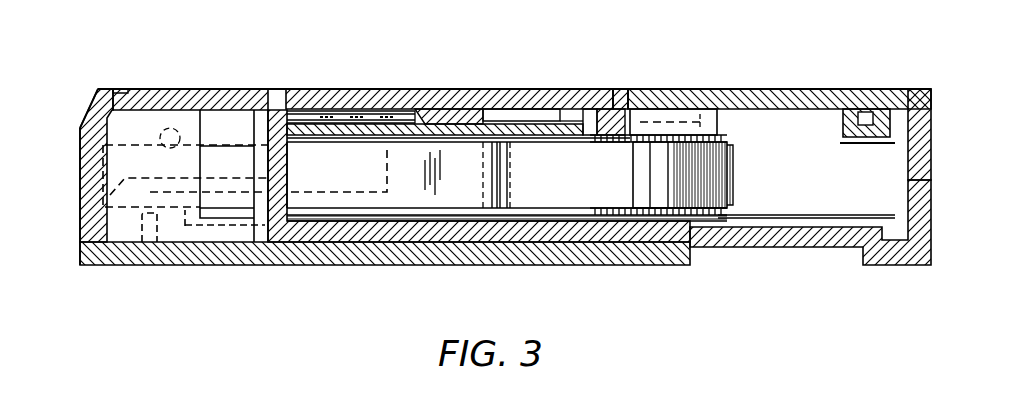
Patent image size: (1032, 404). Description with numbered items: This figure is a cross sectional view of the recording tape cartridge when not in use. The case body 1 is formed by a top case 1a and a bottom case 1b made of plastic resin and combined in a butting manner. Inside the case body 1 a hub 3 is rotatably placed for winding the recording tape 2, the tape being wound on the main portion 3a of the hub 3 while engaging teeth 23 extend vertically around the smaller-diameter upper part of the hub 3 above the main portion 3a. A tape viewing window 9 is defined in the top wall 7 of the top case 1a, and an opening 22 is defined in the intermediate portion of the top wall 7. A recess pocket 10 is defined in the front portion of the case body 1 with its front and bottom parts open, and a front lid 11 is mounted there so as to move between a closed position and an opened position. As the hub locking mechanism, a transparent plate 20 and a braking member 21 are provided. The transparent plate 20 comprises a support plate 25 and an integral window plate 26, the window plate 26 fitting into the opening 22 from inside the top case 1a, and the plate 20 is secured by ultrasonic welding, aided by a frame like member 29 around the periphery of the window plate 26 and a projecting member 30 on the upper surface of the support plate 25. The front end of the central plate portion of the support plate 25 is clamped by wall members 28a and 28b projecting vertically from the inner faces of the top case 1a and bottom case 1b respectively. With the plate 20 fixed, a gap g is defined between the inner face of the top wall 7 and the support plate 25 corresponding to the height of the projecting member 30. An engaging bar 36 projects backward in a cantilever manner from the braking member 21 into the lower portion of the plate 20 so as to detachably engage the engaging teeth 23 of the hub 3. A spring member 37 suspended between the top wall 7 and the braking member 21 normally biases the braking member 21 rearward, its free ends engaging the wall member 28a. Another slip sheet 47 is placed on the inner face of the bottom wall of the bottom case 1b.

The case body 1 is at (930, 98).
The top case 1a is at (919, 160).
The bottom case 1b is at (918, 257).
The recording tape 2 is at (80, 148).
The hub 3 is at (732, 200).
The main portion 3a is at (733, 165).
The top wall 7 is at (862, 100).
The tape viewing window 9 is at (806, 91).
The recess pocket 10 is at (263, 232).
The front lid 11 is at (93, 200).
The transparent plate 20 is at (627, 88).
The braking member 21 is at (428, 110).
The opening 22 is at (845, 126).
The engaging teeth 23 is at (700, 146).
The support plate 25 is at (594, 143).
The window plate 26 is at (695, 109).
The wall member 28a is at (256, 100).
The wall member 28b is at (287, 180).
The frame like member 29 is at (901, 100).
The projecting member 30 is at (590, 109).
The engaging bar 36 is at (512, 109).
The spring member 37 is at (345, 110).
The slip sheet 47 is at (781, 214).
The gap g is at (560, 109).